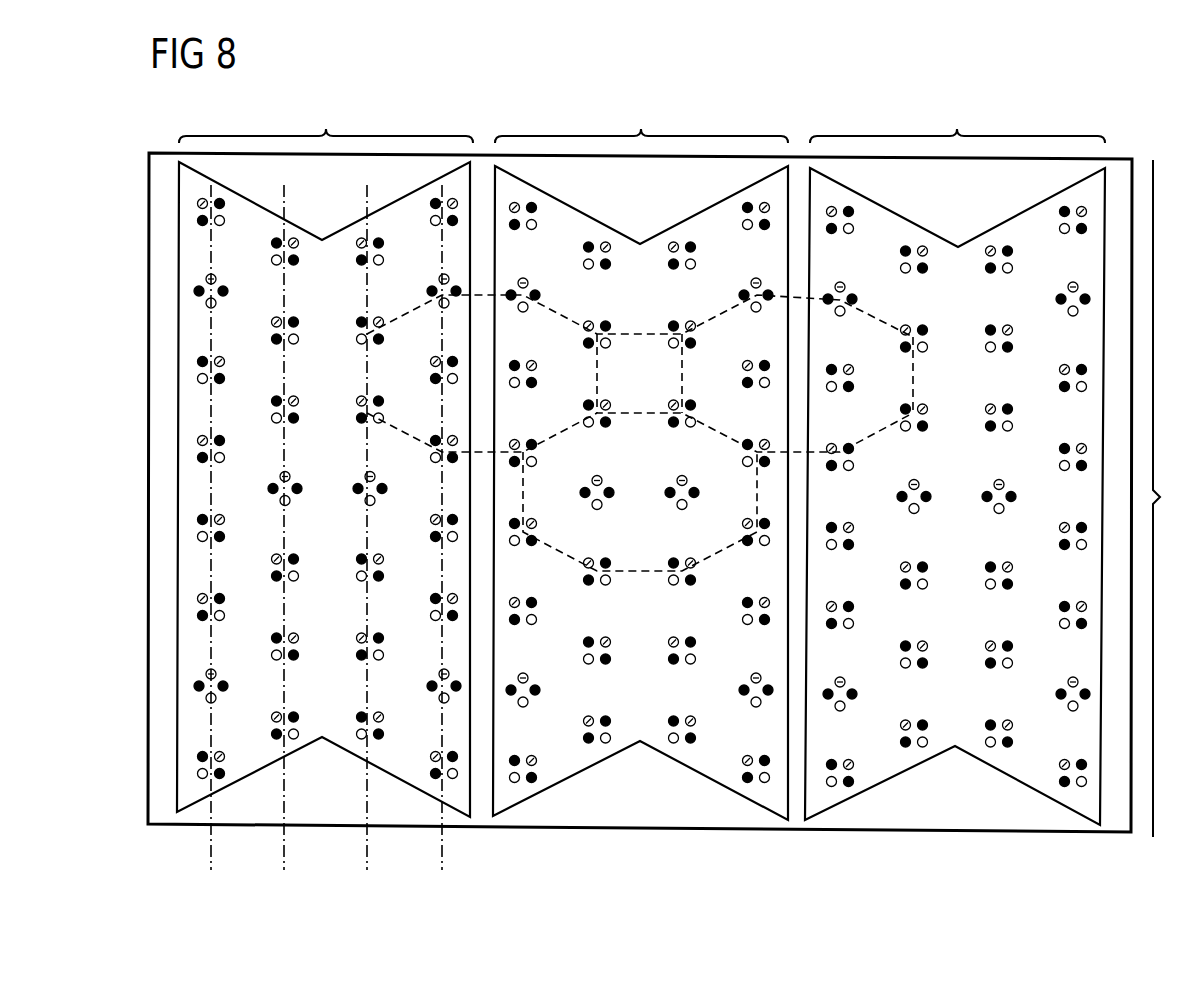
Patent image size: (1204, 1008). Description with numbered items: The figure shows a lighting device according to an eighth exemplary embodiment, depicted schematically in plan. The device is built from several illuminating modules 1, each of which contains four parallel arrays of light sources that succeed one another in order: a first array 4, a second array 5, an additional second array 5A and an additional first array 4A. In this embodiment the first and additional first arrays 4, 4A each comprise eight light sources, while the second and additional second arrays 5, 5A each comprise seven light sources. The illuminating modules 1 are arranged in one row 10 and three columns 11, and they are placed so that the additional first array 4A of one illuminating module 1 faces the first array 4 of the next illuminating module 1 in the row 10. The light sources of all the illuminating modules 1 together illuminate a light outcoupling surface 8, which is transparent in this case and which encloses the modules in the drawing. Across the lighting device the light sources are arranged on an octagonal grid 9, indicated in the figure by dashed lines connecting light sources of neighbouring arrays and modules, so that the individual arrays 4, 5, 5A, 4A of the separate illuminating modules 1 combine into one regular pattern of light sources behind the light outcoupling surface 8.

The illuminating module 1 is at (340, 250).
The first array 4 is at (208, 858).
The second array 5 is at (282, 858).
The additional second array 5A is at (365, 860).
The additional first array 4A is at (440, 862).
The light outcoupling surface 8 is at (1118, 168).
The octagonal grid 9 is at (730, 318).
The row 10 is at (1175, 498).
The columns 11 is at (642, 442).